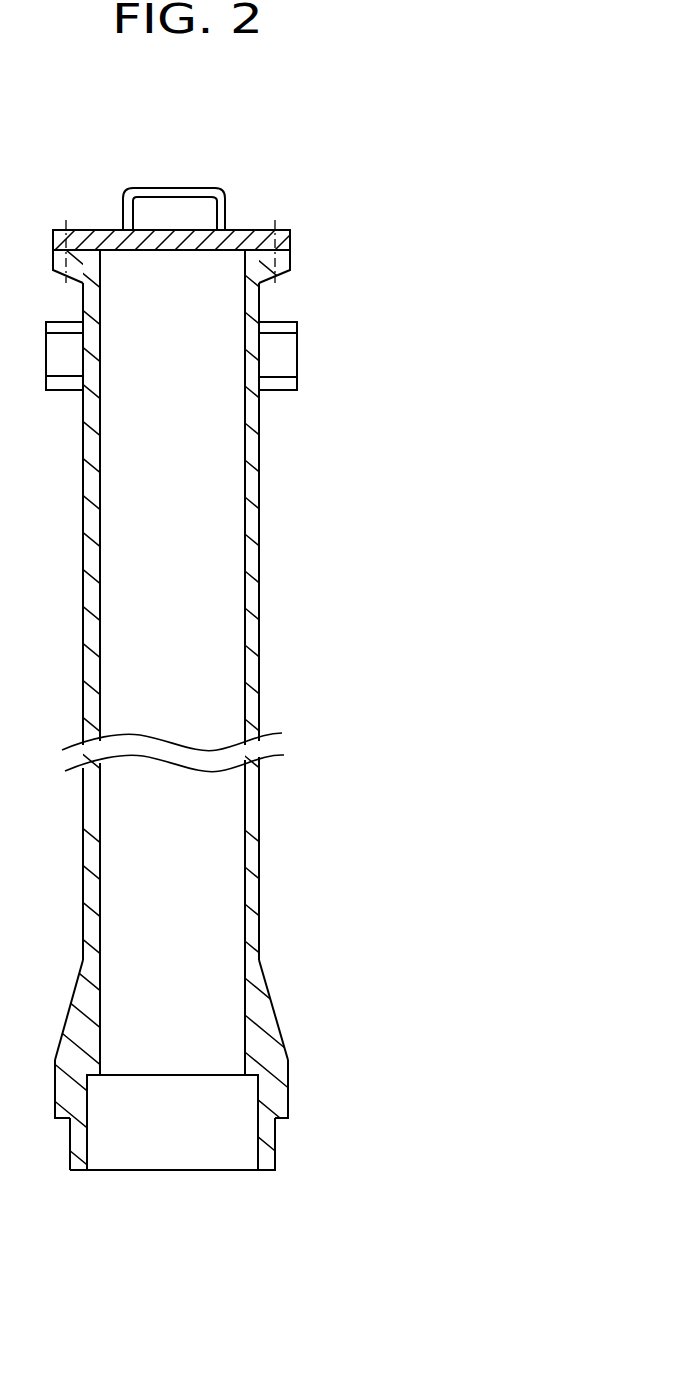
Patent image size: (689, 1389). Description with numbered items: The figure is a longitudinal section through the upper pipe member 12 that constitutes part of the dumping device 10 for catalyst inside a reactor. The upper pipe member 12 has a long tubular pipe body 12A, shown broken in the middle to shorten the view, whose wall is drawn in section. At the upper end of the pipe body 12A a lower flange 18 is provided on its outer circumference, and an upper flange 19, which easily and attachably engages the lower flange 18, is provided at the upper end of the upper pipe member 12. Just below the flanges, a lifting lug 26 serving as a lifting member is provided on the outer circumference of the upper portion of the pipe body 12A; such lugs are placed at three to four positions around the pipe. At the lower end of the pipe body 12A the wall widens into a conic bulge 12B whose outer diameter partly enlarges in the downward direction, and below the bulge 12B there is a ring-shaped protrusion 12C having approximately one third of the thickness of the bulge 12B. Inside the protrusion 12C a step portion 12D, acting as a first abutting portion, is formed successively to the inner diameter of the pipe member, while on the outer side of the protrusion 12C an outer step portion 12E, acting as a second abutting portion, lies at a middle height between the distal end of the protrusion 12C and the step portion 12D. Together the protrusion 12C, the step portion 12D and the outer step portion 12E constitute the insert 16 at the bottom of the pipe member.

The dumping device 10 is at (433, 207).
The upper pipe member 12 is at (259, 645).
The pipe body 12A is at (259, 530).
The conic bulge 12B is at (275, 1015).
The ring-shaped protrusion 12C is at (264, 1172).
The step portion 12D is at (257, 1077).
The outer step portion 12E is at (283, 1120).
The insert 16 is at (395, 1257).
The lower flange 18 is at (290, 262).
The upper flange 19 is at (293, 240).
The lifting lug 26 is at (283, 355).